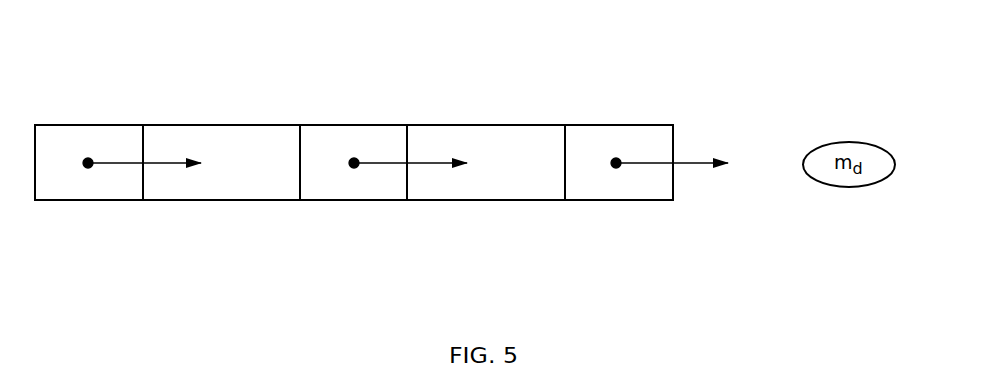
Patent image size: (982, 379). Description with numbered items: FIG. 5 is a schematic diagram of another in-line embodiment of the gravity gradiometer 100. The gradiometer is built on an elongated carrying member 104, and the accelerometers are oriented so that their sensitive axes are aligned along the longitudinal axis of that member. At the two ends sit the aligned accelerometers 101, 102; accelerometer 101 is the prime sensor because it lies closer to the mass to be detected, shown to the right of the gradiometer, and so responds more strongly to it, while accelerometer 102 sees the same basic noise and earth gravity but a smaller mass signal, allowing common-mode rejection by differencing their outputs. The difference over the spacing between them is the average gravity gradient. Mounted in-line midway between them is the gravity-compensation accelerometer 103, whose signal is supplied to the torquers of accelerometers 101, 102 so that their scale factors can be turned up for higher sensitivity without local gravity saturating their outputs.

The gravity gradiometer 100 is at (136, 92).
The accelerometer 101 is at (618, 137).
The accelerometer 102 is at (98, 140).
The gravity-compensation accelerometer 103 is at (388, 190).
The elongated carrying member 104 is at (233, 200).